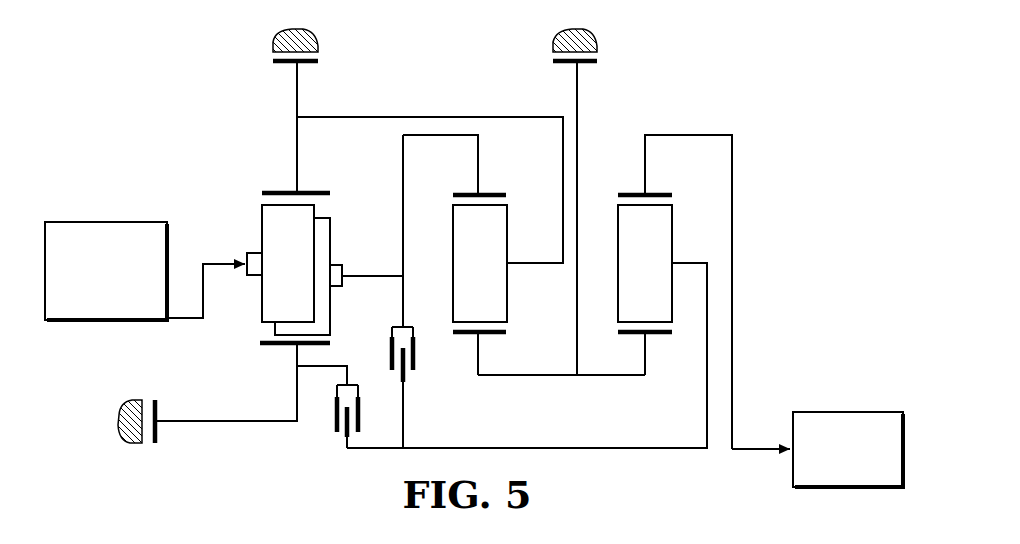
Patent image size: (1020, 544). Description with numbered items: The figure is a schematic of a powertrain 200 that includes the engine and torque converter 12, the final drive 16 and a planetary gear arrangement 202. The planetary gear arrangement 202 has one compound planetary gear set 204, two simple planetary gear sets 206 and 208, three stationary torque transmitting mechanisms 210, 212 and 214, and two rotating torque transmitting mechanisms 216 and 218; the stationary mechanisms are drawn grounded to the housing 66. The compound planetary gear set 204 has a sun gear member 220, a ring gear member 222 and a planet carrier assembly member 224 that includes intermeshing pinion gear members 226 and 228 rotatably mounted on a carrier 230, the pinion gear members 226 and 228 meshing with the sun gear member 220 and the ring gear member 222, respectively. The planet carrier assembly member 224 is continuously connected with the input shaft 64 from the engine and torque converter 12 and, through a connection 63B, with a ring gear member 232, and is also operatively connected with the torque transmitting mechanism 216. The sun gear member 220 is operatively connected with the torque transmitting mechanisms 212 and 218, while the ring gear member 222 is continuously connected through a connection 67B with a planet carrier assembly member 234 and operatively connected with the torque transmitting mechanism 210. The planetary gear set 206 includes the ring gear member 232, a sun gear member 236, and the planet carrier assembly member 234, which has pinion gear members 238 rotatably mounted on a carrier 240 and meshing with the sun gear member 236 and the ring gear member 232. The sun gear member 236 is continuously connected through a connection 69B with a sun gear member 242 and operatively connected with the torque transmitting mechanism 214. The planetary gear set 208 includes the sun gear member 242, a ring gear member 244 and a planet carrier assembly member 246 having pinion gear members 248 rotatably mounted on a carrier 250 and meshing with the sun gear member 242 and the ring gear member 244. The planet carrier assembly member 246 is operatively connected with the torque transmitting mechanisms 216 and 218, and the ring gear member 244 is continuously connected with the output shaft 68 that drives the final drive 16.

The engine and torque converter 12 is at (106, 220).
The final drive 16 is at (845, 409).
The input shaft 64 is at (218, 265).
The transmission housing 66 is at (272, 44).
The output shaft 68 is at (748, 450).
The powertrain 200 is at (153, 140).
The planetary gear arrangement 202 is at (498, 108).
The compound planetary gear set 204 is at (279, 242).
The simple planetary gear set 206 is at (488, 285).
The simple planetary gear set 208 is at (695, 277).
The stationary torque transmitting mechanism 210 is at (268, 60).
The stationary torque transmitting mechanism 212 is at (151, 449).
The stationary torque transmitting mechanism 214 is at (602, 60).
The rotating torque transmitting mechanism 216 is at (410, 392).
The rotating torque transmitting mechanism 218 is at (326, 429).
The sun gear member 220 is at (318, 348).
The ring gear member 222 is at (273, 191).
The planet carrier assembly member 224 is at (335, 221).
The pinion gear member 226 is at (323, 323).
The pinion gear member 228 is at (232, 200).
The carrier 230 is at (373, 276).
The ring gear member 232 is at (467, 193).
The planet carrier assembly member 234 is at (516, 274).
The sun gear member 236 is at (467, 338).
The pinion gear member 238 is at (460, 253).
The carrier 240 is at (532, 263).
The sun gear member 242 is at (628, 334).
The ring gear member 244 is at (630, 192).
The planet carrier assembly member 246 is at (687, 221).
The pinion gear member 248 is at (665, 242).
The carrier 250 is at (690, 258).
The connection 67B is at (343, 117).
The connection 63B is at (418, 135).
The connection 69B is at (543, 376).